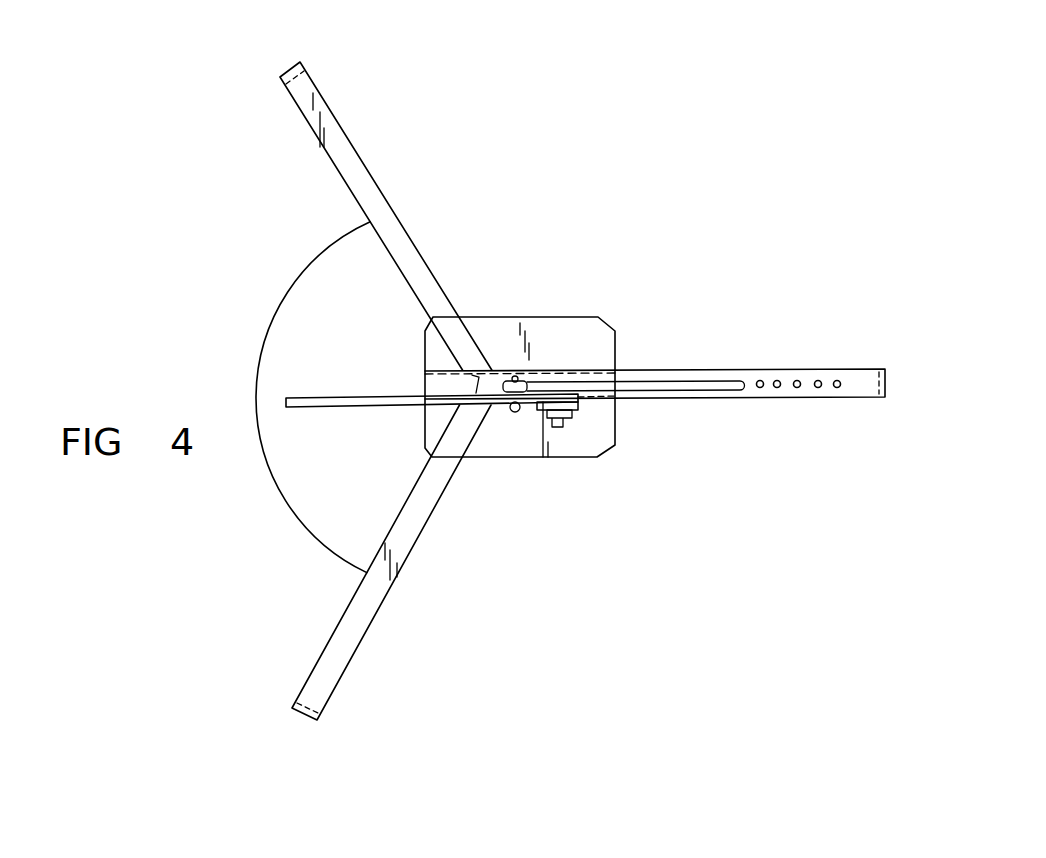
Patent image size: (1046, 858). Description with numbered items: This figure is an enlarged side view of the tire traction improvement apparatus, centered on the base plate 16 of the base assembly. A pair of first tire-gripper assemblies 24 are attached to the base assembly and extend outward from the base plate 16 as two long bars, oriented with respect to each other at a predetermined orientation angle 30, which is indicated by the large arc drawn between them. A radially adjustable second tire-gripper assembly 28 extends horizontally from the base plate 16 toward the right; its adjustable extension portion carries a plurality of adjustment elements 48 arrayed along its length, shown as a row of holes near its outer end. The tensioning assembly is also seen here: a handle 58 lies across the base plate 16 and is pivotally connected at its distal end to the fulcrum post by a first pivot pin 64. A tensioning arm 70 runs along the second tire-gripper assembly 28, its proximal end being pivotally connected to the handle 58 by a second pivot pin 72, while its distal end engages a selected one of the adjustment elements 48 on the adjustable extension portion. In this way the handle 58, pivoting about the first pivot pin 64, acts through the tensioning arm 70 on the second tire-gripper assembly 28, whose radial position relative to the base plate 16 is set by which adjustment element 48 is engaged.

The base plate 16 is at (572, 335).
The first tire-gripper assemblies 24 is at (340, 173).
The second tire-gripper assembly 28 is at (786, 398).
The orientation angle 30 is at (279, 305).
The adjustment elements 48 is at (838, 380).
The handle 58 is at (360, 397).
The first pivot pin 64 is at (563, 427).
The tensioning arm 70 is at (660, 383).
The second pivot pin 72 is at (512, 411).